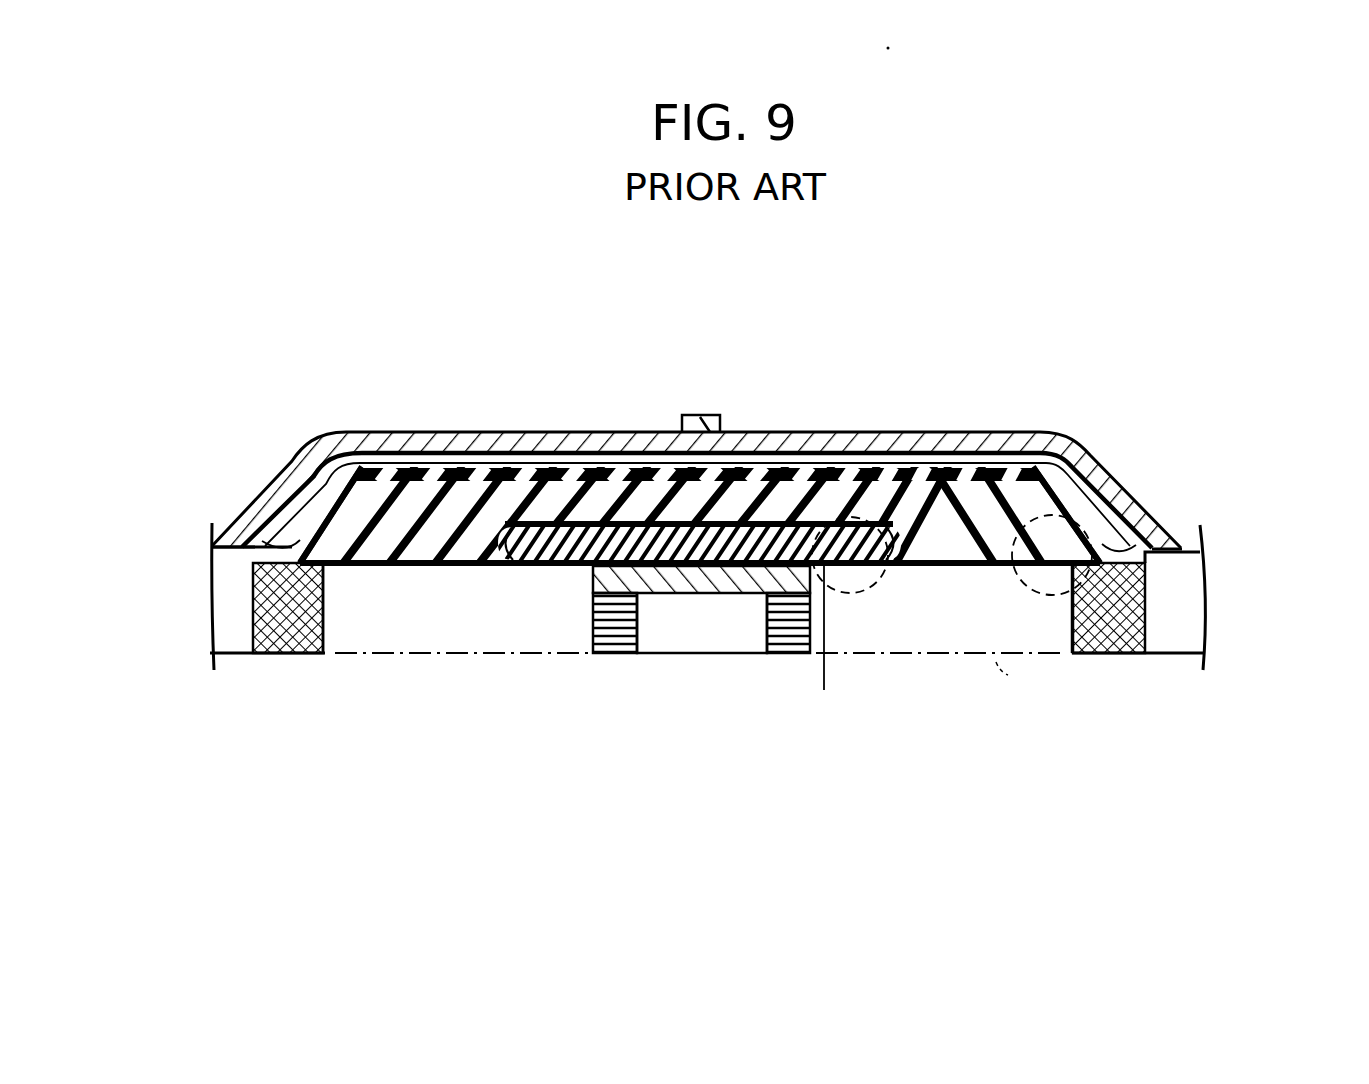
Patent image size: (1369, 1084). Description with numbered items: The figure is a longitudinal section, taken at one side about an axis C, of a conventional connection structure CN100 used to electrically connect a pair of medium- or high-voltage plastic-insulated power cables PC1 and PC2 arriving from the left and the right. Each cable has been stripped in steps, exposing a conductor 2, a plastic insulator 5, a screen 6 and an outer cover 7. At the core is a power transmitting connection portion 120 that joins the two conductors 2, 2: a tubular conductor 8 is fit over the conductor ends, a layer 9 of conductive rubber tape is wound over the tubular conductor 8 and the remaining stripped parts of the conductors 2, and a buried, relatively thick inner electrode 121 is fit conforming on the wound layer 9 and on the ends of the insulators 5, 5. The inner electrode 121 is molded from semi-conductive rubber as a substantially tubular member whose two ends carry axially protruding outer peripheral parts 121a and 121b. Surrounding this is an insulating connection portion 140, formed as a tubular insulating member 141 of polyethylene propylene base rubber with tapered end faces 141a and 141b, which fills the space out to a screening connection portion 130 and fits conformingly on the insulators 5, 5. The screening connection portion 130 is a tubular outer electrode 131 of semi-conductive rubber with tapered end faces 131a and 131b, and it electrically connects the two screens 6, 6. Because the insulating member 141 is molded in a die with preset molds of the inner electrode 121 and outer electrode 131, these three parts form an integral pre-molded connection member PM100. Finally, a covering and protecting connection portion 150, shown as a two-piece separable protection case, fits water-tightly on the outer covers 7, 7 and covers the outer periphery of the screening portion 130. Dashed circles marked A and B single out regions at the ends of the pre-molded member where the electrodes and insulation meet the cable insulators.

The covering and protecting connection portion 150 is at (800, 432).
The tubular outer electrode 131 is at (523, 463).
The tapered end face 131a is at (292, 545).
The tapered end face 131b is at (1072, 518).
The screening connection portion 130 is at (650, 468).
The insulating connection portion 140 is at (871, 465).
The tubular insulating member 141 is at (927, 477).
The tapered end face 141a is at (410, 520).
The tapered end face 141b is at (965, 527).
The inner electrode 121 is at (572, 565).
The axially protruding outer peripheral part 121a is at (460, 563).
The axially protruding outer peripheral part 121b is at (888, 562).
The power transmitting connection portion 120 is at (697, 676).
The outer cover 7 is at (236, 655).
The stripped screen 6 is at (289, 655).
The plastic insulator 5 is at (493, 655).
The tubular conductor 8 is at (680, 632).
The stripped conductor 2 is at (602, 655).
The layer of conductive rubber tape 9 is at (824, 690).
The region A is at (850, 582).
The region B is at (1030, 605).
The axis C is at (996, 662).
The power cable PC1 is at (194, 606).
The power cable PC2 is at (1226, 602).
The connection structure CN100 is at (1080, 378).
The pre-molded connection member PM100 is at (1057, 456).